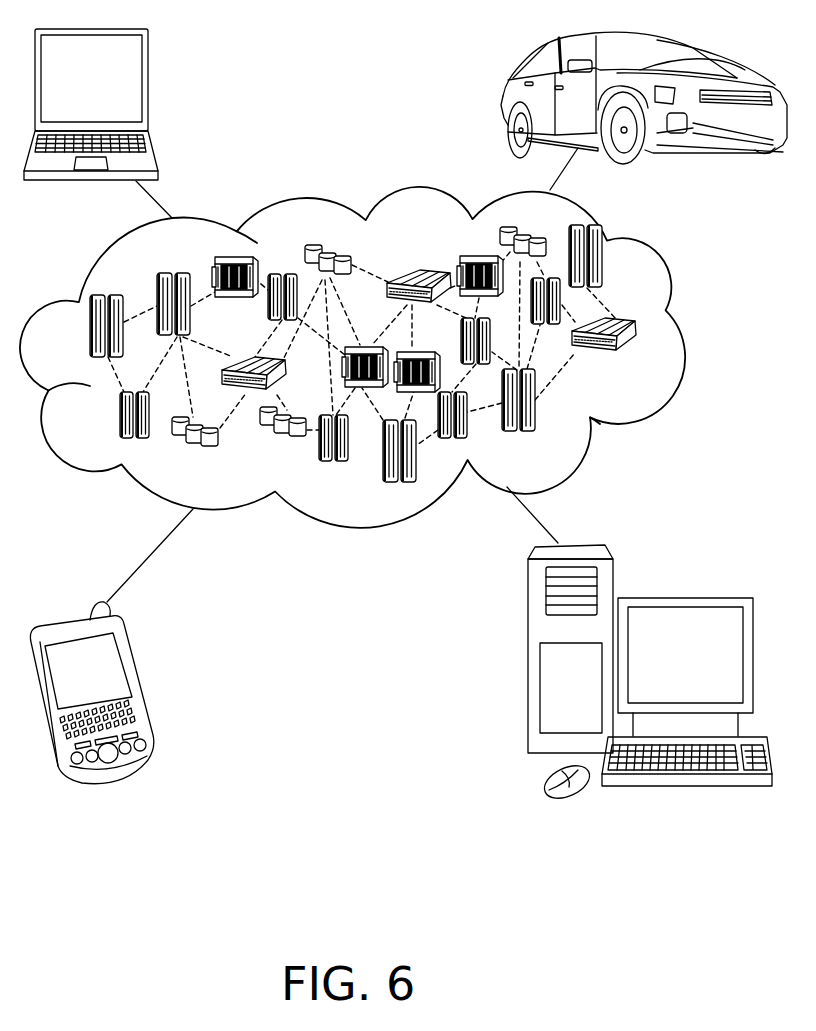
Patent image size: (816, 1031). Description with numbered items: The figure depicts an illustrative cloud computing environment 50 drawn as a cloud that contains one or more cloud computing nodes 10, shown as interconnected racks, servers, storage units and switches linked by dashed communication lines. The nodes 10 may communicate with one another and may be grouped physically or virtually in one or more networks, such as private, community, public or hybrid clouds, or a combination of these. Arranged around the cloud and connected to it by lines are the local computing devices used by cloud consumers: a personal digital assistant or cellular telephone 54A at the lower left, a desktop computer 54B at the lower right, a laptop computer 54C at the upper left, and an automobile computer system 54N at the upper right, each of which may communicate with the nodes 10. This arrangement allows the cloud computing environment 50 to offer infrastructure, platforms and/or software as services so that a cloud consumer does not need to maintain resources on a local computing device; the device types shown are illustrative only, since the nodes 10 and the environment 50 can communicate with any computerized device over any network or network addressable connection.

The laptop computer 54C is at (148, 85).
The automobile computer system 54N is at (505, 99).
The personal digital assistant or cellular telephone 54A is at (140, 682).
The desktop computer 54B is at (682, 597).
The cloud computing environment 50 is at (376, 357).
The cloud computing nodes 10 is at (636, 366).